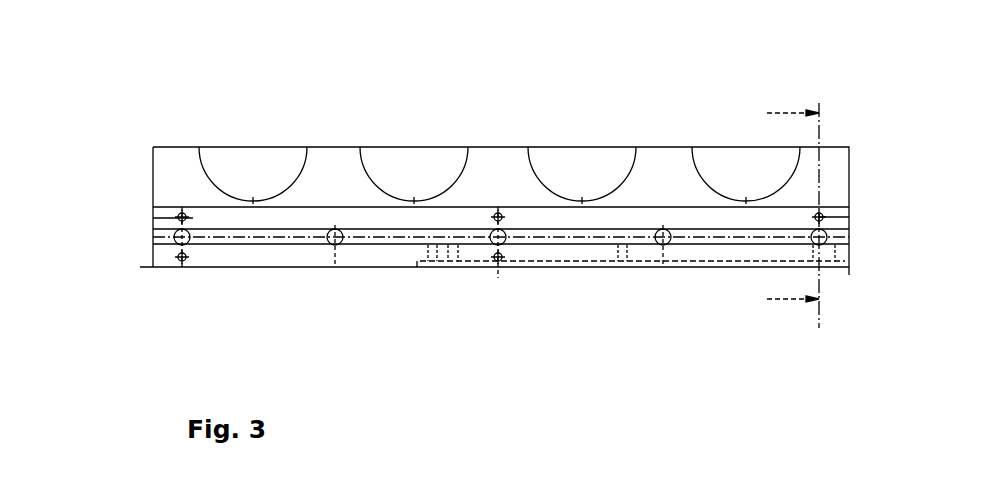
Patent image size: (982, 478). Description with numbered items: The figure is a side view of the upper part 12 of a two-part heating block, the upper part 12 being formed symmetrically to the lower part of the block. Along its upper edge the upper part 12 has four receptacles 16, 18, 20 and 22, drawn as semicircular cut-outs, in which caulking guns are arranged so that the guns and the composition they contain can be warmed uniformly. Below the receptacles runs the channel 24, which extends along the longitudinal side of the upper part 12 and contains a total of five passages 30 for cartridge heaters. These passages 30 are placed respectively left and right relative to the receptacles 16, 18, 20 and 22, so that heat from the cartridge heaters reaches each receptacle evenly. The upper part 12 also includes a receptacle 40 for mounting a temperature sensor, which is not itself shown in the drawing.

The upper part 12 is at (160, 88).
The receptacle 16 is at (717, 170).
The receptacle 18 is at (558, 162).
The receptacle 20 is at (422, 167).
The receptacle 22 is at (268, 162).
The channel 24 is at (715, 238).
The passage 30 is at (182, 237).
The receptacle for mounting a temperature sensor 40 is at (752, 250).